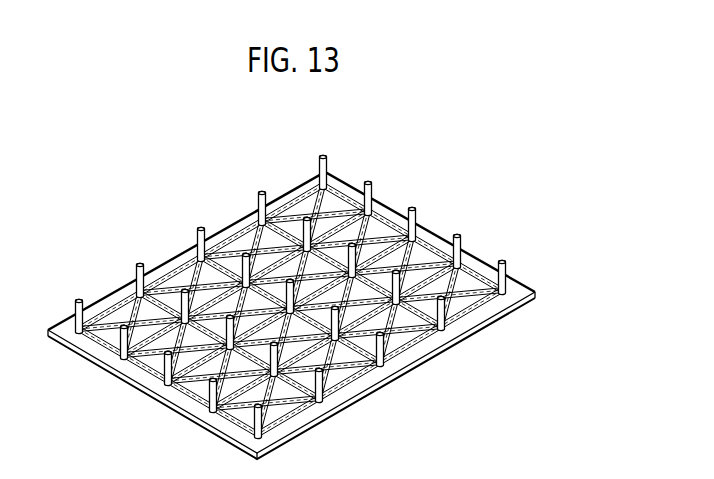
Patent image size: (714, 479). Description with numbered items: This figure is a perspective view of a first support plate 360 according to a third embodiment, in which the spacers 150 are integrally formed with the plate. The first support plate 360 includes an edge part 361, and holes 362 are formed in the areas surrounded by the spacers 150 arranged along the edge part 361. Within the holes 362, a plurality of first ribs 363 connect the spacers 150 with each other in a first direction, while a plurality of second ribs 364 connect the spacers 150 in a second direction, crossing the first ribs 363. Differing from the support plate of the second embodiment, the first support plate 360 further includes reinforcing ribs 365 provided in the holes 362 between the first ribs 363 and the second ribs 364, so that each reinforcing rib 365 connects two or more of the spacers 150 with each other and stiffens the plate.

The spacer 150 is at (208, 395).
The first support plate 360 is at (291, 308).
The edge part 361 is at (413, 350).
The hole 362 is at (291, 312).
The first rib 363 is at (265, 382).
The second rib 364 is at (363, 352).
The reinforcing rib 365 is at (291, 296).